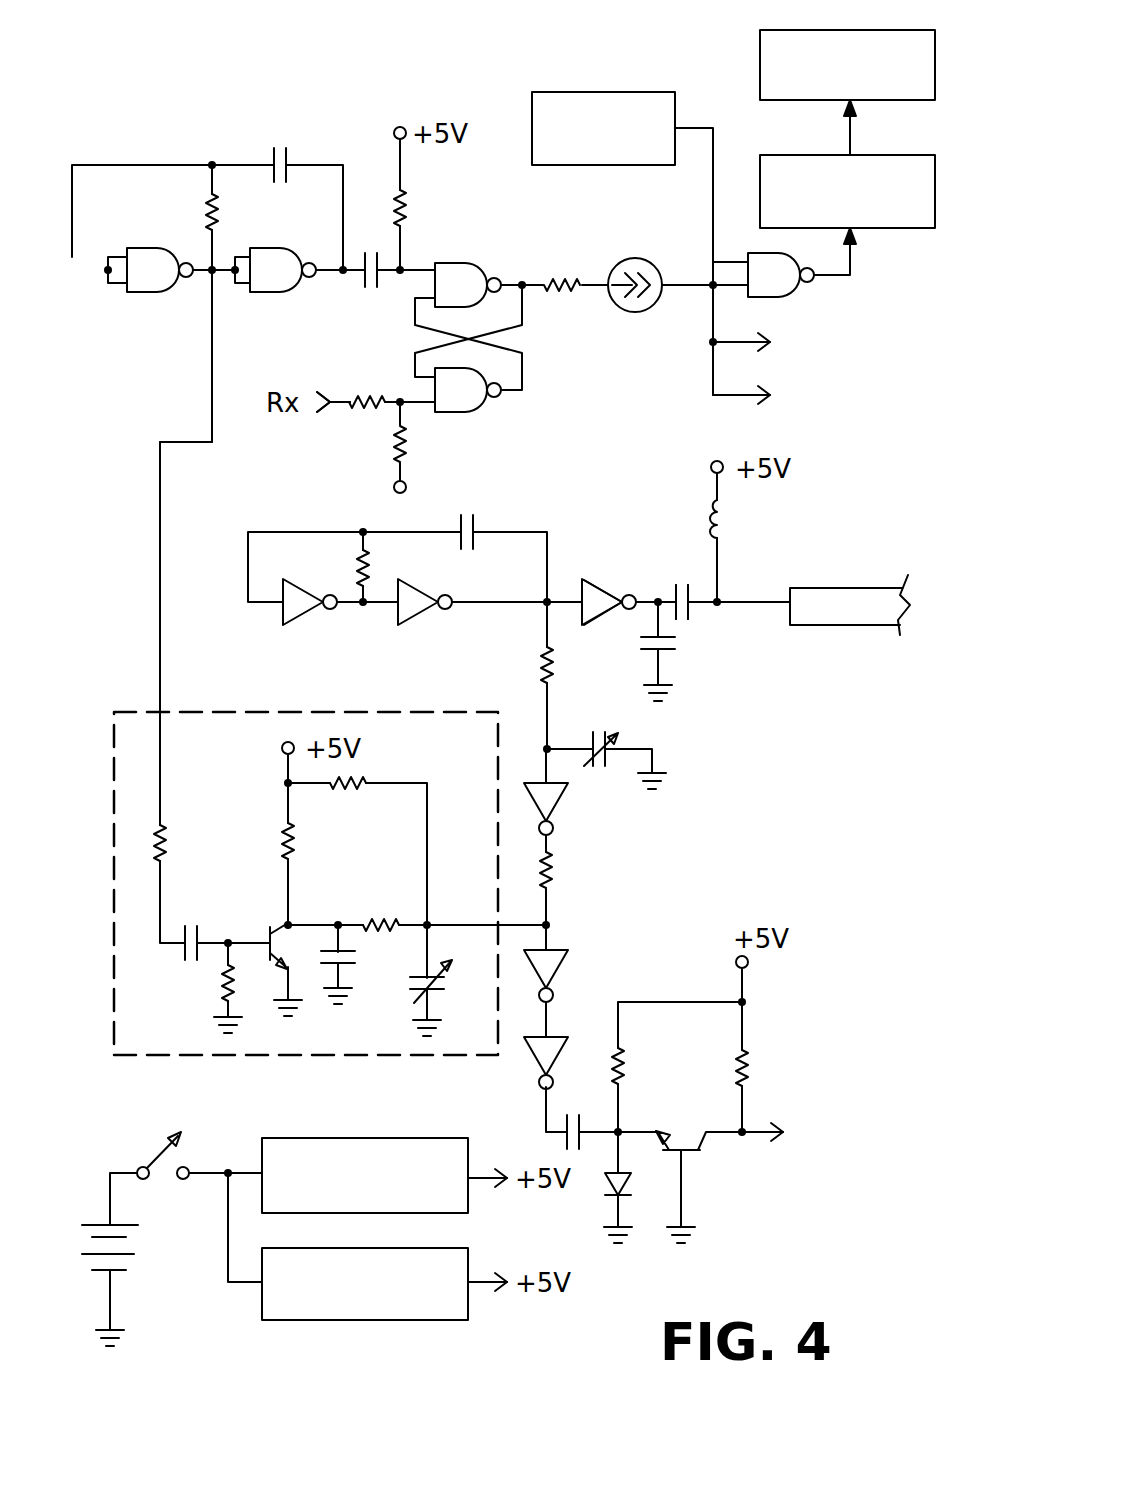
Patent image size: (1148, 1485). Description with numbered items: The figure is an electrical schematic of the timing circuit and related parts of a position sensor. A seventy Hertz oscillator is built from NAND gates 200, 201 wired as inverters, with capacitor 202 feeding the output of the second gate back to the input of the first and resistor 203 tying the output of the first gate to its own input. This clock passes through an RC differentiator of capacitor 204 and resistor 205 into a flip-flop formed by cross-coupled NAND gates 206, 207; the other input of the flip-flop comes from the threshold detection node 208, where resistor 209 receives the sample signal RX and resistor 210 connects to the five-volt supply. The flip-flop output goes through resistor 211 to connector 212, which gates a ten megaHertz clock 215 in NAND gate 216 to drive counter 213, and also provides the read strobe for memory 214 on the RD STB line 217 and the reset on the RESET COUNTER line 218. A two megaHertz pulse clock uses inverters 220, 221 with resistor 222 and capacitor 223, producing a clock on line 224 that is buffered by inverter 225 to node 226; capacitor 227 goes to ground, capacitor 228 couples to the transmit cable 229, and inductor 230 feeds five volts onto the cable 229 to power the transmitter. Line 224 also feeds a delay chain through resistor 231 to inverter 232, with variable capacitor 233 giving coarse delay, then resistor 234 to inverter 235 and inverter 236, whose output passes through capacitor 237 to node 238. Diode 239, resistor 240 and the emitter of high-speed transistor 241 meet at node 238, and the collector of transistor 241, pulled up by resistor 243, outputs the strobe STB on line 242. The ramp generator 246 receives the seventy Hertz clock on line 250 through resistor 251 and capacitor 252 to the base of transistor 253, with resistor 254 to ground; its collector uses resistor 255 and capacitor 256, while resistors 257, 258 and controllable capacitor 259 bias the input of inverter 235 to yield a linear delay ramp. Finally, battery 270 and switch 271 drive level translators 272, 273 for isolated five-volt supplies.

The first NAND gate 200 is at (150, 293).
The second NAND gate 201 is at (278, 293).
The capacitor 202 is at (272, 158).
The resistor 203 is at (205, 212).
The capacitor 204 is at (359, 292).
The resistor 205 is at (404, 196).
The NAND gate 206 is at (462, 263).
The NAND gate 207 is at (485, 412).
The node 208 is at (392, 402).
The resistor 209 is at (376, 410).
The resistor 210 is at (405, 448).
The resistor 211 is at (564, 281).
The connector 212 is at (636, 258).
The counter 213 is at (820, 155).
The memory 214 is at (760, 48).
The clock 215 is at (632, 92).
The NAND gate 216 is at (800, 297).
The read strobe output 217 is at (713, 342).
The reset counter output 218 is at (713, 395).
The inverter 220 is at (313, 623).
The inverter 221 is at (430, 624).
The resistor 222 is at (358, 562).
The capacitor 223 is at (476, 524).
The line 224 is at (578, 582).
The inverter 225 is at (607, 623).
The node 226 is at (660, 601).
The capacitor 227 is at (673, 648).
The capacitor 228 is at (690, 622).
The transmit cable 229 is at (850, 588).
The inductor 230 is at (719, 525).
The resistor 231 is at (541, 668).
The inverter 232 is at (558, 800).
The variable capacitor 233 is at (618, 737).
The resistor 234 is at (549, 885).
The inverter 235 is at (565, 962).
The inverter 236 is at (560, 1040).
The capacitor 237 is at (583, 1120).
The node 238 is at (624, 1138).
The diode 239 is at (606, 1180).
The resistor 240 is at (627, 1052).
The high-speed transistor 241 is at (700, 1150).
The line 242 is at (760, 1125).
The resistor 243 is at (751, 1070).
The ramp generator 246 is at (235, 712).
The line 250 is at (160, 590).
The resistor 251 is at (166, 842).
The capacitor 252 is at (200, 935).
The transistor 253 is at (300, 928).
The resistor 254 is at (224, 976).
The resistor 255 is at (284, 846).
The capacitor 256 is at (347, 966).
The resistor 257 is at (340, 790).
The resistor 258 is at (385, 918).
The controllable capacitor 259 is at (440, 990).
The battery 270 is at (130, 1255).
The switch 271 is at (150, 1160).
The level translator 272 is at (325, 1138).
The level translator 273 is at (405, 1320).